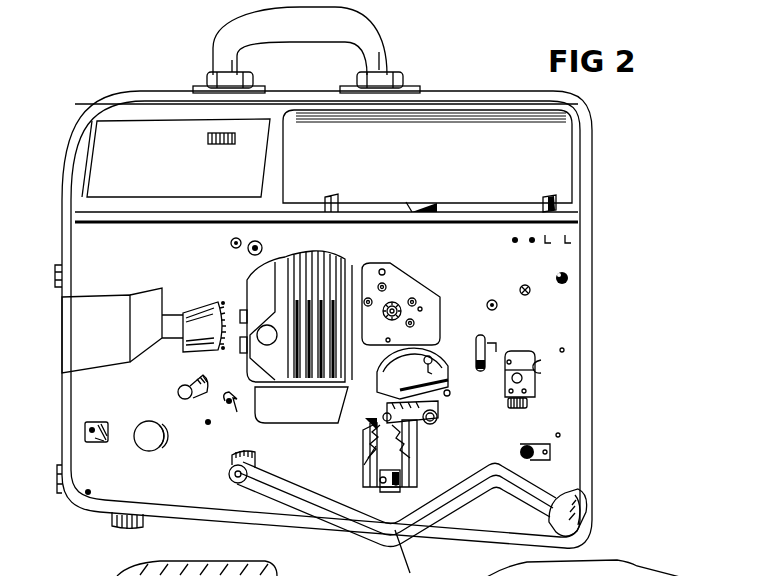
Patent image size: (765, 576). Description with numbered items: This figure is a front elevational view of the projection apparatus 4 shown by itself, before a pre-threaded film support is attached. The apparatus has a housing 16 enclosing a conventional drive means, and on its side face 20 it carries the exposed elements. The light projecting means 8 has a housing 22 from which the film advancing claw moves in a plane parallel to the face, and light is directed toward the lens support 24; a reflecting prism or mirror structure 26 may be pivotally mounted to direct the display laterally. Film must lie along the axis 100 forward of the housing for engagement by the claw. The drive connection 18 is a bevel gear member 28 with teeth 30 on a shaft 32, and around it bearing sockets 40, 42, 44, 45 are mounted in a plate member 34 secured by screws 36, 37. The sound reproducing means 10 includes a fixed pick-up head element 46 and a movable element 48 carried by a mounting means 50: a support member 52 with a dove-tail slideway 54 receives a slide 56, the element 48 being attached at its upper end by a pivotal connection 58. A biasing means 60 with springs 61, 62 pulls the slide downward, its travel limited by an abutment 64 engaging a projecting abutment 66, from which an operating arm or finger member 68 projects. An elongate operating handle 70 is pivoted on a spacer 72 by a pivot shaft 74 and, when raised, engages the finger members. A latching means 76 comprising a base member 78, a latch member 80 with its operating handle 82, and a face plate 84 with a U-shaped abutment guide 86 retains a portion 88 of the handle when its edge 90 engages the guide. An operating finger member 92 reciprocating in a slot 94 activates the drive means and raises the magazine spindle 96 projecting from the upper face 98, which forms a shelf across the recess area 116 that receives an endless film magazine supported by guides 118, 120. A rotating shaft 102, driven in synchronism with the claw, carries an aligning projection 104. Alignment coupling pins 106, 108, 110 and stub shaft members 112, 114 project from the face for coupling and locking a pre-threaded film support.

The projection apparatus 4 is at (591, 108).
The light projecting means 8 is at (346, 265).
The sound reproducing means 10 is at (448, 404).
The housing 16 is at (589, 282).
The drive connection 18 is at (415, 297).
The side face 20 is at (490, 230).
The housing of light projection means 22 is at (269, 278).
The lens support 24 is at (200, 310).
The reflecting prism or mirror structure 26 is at (128, 292).
The bevel gear member 28 is at (400, 312).
The teeth 30 is at (394, 301).
The shaft 32 is at (376, 336).
The plate member 34 is at (441, 328).
The screw 36 is at (383, 268).
The screw 37 is at (384, 347).
The bearing socket 40 is at (422, 301).
The bearing socket 42 is at (377, 286).
The bearing socket 44 is at (419, 332).
The bearing socket 45 is at (353, 303).
The sound reproducing element 46 is at (346, 398).
The movable element 48 is at (433, 425).
The mounting means 50 is at (362, 453).
The support member 52 is at (418, 474).
The slideway 54 is at (370, 472).
The slide 56 is at (409, 483).
The pivotal connection 58 is at (383, 417).
The biasing means 60 is at (370, 441).
The spring 61 is at (413, 443).
The spring 62 is at (363, 466).
The abutment 64 is at (398, 487).
The projecting abutment 66 is at (381, 485).
The operating arm or finger member 68 is at (387, 493).
The operating handle 70 is at (284, 511).
The spacer 72 is at (250, 464).
The pivot shaft 74 is at (231, 480).
The latching means 76 is at (537, 361).
The base member 78 is at (522, 381).
The latch member 80 is at (529, 397).
The operating handle of latch 82 is at (516, 409).
The face plate 84 is at (507, 383).
The U-shaped abutment guide 86 is at (517, 360).
The portion of handle 88 is at (547, 500).
The edge of handle 90 is at (570, 494).
The operating finger member 92 is at (475, 353).
The slot 94 is at (501, 335).
The spindle 96 is at (436, 202).
The upper face 98 is at (406, 201).
The axis 100 is at (250, 292).
The rotating shaft 102 is at (180, 391).
The aligning projection 104 is at (185, 379).
The alignment coupling pin 106 is at (231, 243).
The alignment coupling pin 108 is at (236, 416).
The alignment coupling pin 110 is at (529, 295).
The stub shaft member 112 is at (262, 248).
The stub shaft member 114 is at (497, 310).
The recess area 116 is at (465, 128).
The guide 118 is at (336, 194).
The guide 120 is at (547, 194).